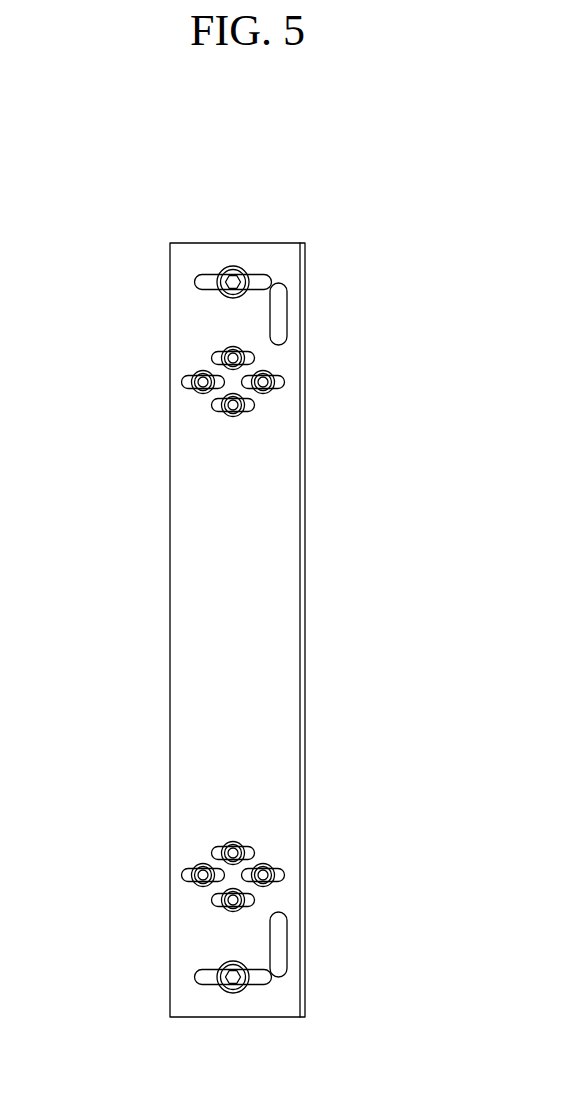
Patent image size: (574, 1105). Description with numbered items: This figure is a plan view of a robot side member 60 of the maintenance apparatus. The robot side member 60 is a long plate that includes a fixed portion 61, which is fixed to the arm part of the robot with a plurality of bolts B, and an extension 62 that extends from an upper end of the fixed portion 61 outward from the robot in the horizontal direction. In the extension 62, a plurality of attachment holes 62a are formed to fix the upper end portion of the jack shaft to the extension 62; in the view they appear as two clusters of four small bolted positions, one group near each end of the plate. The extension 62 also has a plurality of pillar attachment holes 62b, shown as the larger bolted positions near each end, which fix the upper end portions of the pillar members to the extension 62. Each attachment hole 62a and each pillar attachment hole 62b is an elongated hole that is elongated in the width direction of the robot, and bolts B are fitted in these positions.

The robot side member 60 is at (270, 238).
The fixed portion 61 is at (303, 553).
The extension 62 is at (195, 262).
The attachment hole 62a is at (213, 355).
The pillar attachment hole 62b is at (205, 284).
The bolt B is at (250, 280).